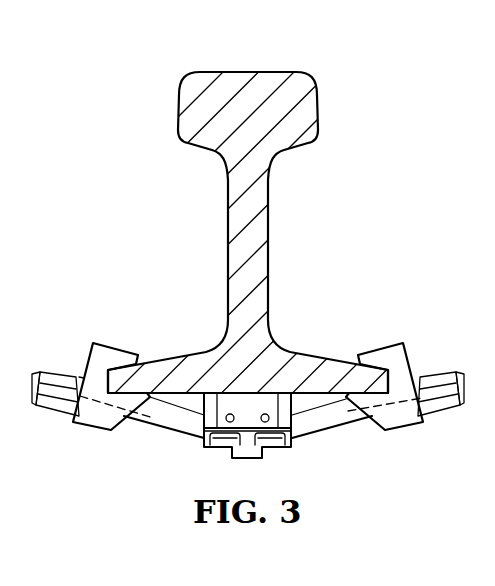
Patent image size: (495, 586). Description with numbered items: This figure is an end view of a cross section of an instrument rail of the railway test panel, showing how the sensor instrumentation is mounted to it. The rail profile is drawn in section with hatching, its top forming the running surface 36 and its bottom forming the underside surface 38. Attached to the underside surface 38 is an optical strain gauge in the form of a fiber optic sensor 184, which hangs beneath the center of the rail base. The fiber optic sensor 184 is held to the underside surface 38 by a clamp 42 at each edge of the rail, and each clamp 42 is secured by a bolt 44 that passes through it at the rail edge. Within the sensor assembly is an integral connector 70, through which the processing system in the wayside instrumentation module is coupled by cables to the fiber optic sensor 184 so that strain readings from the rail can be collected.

The running surface 36 is at (238, 71).
The underside surface 38 is at (315, 393).
The clamp 42 is at (117, 347).
The bolt 44 is at (42, 410).
The integral connector 70 is at (243, 402).
The fiber optic sensor 184 is at (247, 459).